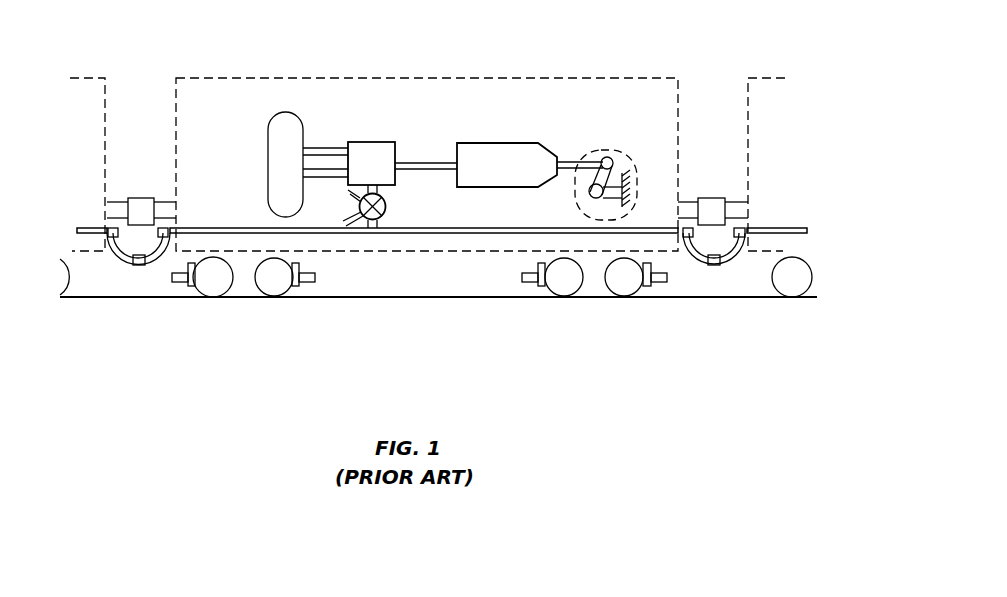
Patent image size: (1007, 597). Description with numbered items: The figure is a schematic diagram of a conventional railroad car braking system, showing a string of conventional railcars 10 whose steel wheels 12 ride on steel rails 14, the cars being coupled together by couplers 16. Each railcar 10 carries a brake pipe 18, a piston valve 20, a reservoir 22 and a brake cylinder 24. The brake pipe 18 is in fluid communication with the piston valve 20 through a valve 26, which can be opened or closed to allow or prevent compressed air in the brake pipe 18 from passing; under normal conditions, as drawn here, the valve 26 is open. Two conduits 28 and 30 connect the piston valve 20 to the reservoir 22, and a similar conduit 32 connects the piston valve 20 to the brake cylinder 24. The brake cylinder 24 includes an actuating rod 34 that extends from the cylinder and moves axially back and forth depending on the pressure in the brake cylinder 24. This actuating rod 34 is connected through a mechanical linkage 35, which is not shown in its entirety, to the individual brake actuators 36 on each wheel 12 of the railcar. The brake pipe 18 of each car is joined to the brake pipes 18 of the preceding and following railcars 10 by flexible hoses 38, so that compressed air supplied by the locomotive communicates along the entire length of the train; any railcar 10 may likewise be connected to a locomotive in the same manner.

The railcar 10 is at (78, 77).
The steel wheel 12 is at (66, 262).
The steel rail 14 is at (438, 326).
The coupler 16 is at (143, 208).
The brake pipe 18 is at (92, 229).
The piston valve 20 is at (373, 151).
The reservoir 22 is at (284, 141).
The brake cylinder 24 is at (505, 156).
The valve 26 is at (387, 205).
The conduit 28 is at (320, 148).
The conduit 30 is at (322, 173).
The conduit 32 is at (422, 163).
The actuating rod 34 is at (575, 162).
The mechanical linkage 35 is at (622, 152).
The brake actuator 36 is at (186, 287).
The flexible hose 38 is at (122, 264).